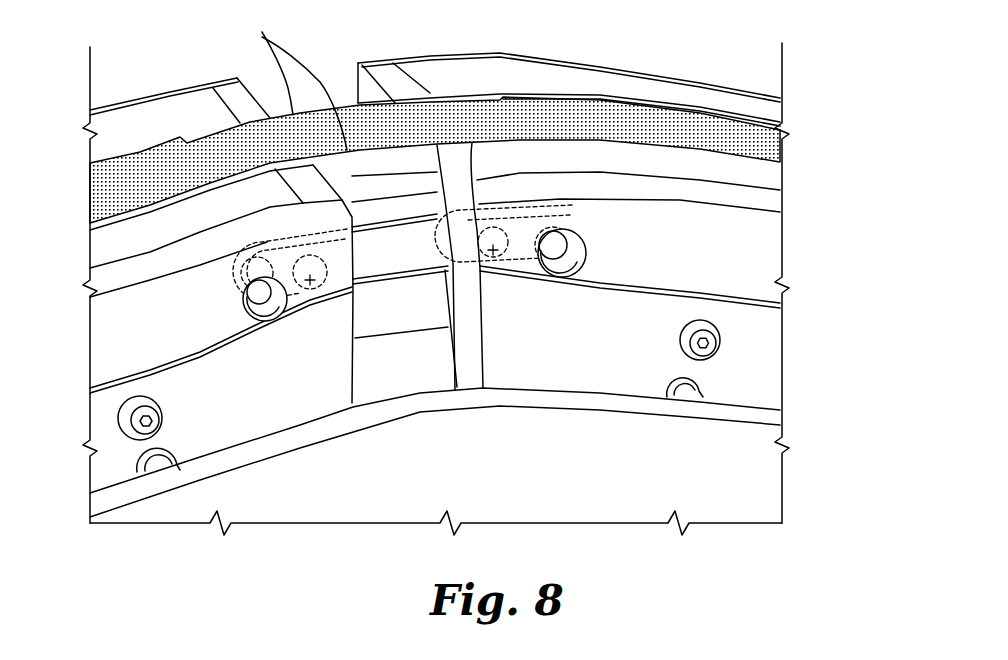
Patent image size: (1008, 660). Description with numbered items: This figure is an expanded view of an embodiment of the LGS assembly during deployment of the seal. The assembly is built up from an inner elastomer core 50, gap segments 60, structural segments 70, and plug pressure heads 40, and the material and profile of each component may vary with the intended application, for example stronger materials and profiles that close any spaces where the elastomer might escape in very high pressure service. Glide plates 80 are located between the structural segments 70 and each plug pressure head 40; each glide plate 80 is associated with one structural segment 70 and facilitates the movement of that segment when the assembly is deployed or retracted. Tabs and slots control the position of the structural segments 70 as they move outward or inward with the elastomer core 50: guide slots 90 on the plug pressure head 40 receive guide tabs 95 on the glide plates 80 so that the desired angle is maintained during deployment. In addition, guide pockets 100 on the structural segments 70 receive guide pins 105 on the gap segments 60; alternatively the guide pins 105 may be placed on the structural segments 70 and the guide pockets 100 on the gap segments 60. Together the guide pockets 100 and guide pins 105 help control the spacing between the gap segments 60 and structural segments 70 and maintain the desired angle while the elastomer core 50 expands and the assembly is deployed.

The plug pressure head 40 is at (590, 497).
The inner elastomer core 50 is at (548, 112).
The gap segment 60 is at (286, 84).
The structural segment 70 is at (655, 87).
The glide plate 80 is at (743, 370).
The guide slot 90 is at (683, 388).
The guide tab 95 is at (679, 372).
The guide pocket 100 is at (260, 248).
The guide pin 105 is at (325, 303).